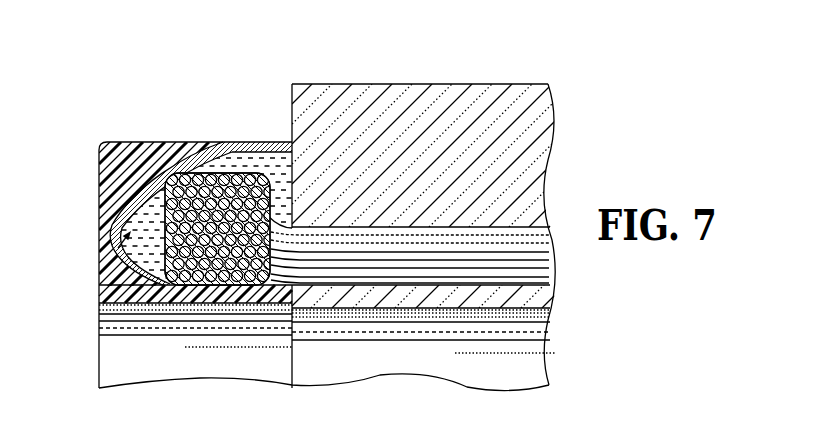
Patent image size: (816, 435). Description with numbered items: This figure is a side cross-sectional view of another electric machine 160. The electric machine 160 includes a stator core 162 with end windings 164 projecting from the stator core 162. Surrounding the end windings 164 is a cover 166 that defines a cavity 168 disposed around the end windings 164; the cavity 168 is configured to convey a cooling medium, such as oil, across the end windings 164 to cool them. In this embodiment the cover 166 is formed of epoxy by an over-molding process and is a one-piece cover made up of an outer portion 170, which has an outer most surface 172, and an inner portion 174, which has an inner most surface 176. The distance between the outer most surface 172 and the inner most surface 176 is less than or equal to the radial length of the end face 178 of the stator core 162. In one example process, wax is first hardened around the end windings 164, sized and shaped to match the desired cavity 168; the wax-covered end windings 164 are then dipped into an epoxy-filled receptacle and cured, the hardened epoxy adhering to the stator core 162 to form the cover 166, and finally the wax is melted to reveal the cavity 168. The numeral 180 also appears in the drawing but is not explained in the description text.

The electric machine 160 is at (508, 44).
The stator core 162 is at (388, 84).
The end windings 164 is at (167, 250).
The cover 166 is at (130, 142).
The cavity 168 is at (98, 266).
The outer portion 170 is at (177, 143).
The outer most surface 172 is at (262, 141).
The inner portion 174 is at (158, 288).
The inner most surface 176 is at (208, 290).
The end face 178 is at (292, 117).
The lower element 180 is at (589, 431).